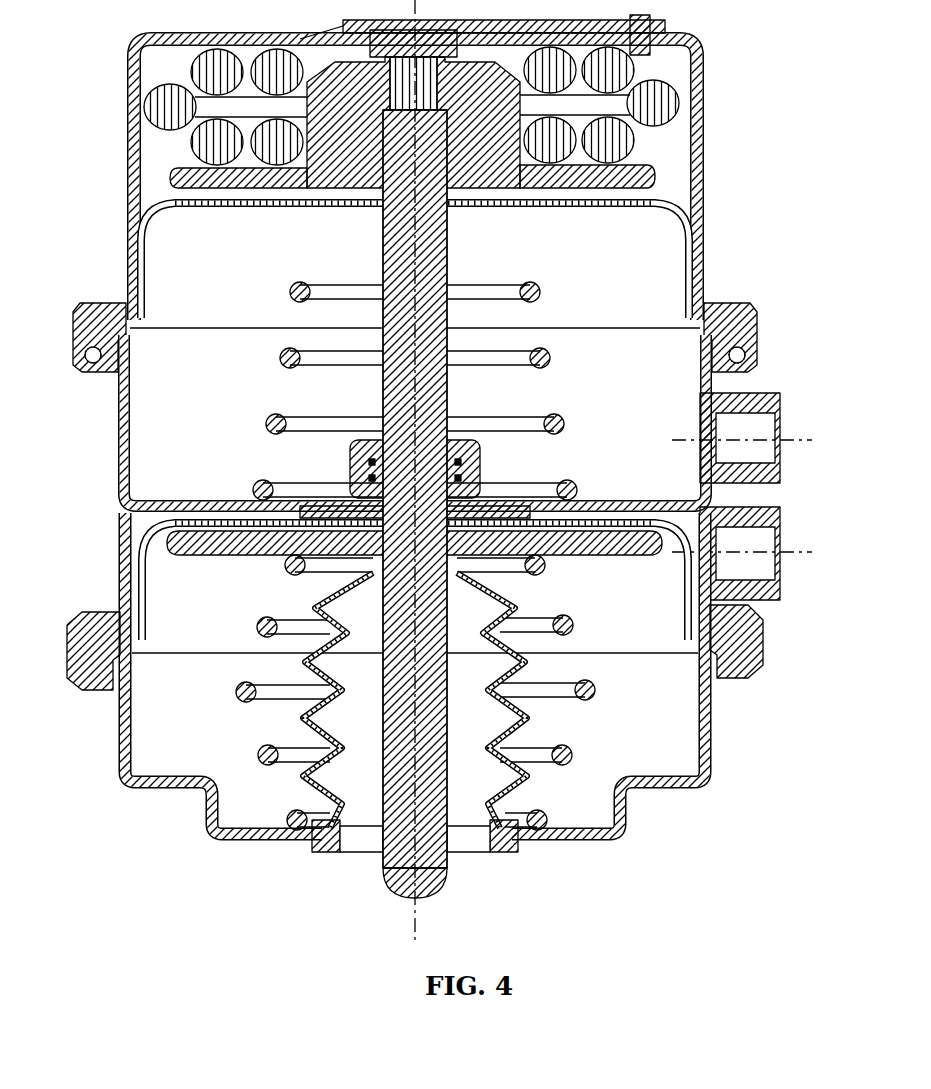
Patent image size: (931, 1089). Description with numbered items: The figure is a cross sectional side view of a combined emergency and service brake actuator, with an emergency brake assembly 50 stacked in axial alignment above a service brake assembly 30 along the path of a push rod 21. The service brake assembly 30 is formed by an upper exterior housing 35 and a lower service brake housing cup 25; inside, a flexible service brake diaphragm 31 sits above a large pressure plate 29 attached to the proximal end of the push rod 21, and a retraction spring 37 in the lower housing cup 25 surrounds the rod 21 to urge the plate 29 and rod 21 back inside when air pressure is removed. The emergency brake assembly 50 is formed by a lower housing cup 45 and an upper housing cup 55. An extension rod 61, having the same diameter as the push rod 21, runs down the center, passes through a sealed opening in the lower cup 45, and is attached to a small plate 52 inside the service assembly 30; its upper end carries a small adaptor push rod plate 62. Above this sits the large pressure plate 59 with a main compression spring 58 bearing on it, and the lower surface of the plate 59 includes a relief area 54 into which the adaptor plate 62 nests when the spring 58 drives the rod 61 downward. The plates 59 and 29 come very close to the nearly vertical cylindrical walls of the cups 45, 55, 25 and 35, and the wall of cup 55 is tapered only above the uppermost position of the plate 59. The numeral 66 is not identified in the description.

The push rod 21 is at (440, 845).
The lower service brake housing cup 25 is at (707, 705).
The pressure plate 29 is at (610, 556).
The service brake assembly 30 is at (790, 620).
The service brake diaphragm 31 is at (673, 576).
The upper exterior housing 35 is at (118, 548).
The retraction spring 37 is at (270, 700).
The lower housing cup 45 is at (706, 390).
The emergency brake assembly 50 is at (740, 153).
The small plate 52 is at (498, 518).
The relief area 54 is at (285, 192).
The upper housing cup 55 is at (693, 107).
The main compression spring 58 is at (620, 73).
The pressure plate 59 is at (637, 175).
The extension rod 61 is at (448, 322).
The adaptor push rod plate 62 is at (520, 207).
The bushing seal 66 is at (350, 467).